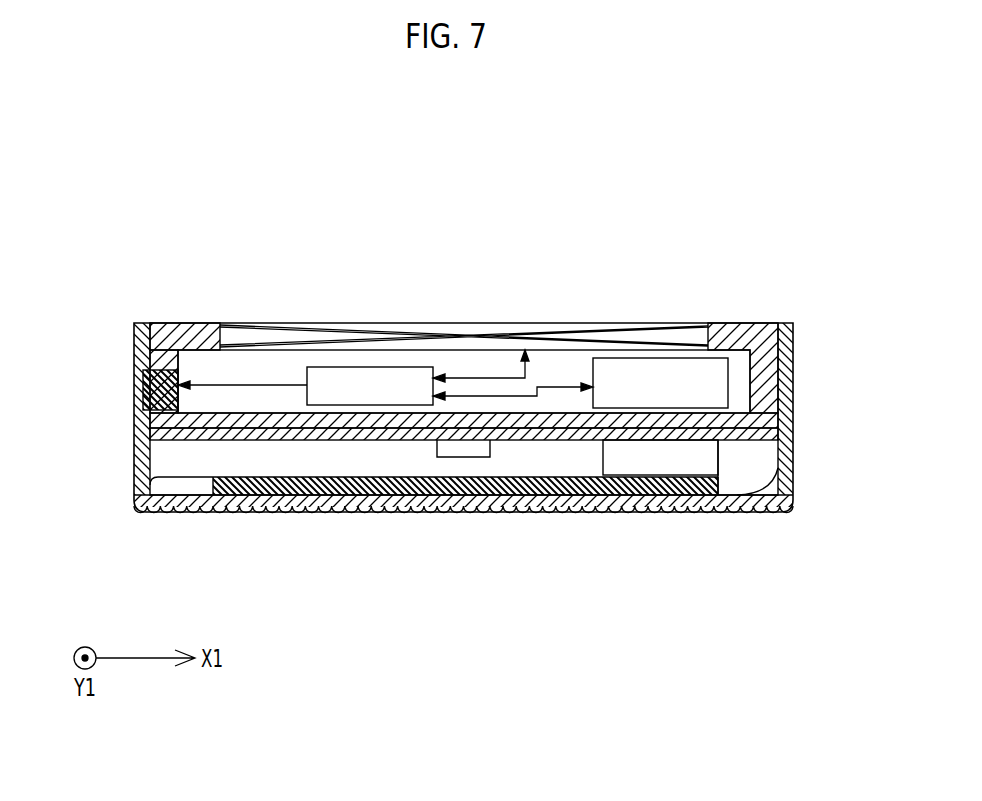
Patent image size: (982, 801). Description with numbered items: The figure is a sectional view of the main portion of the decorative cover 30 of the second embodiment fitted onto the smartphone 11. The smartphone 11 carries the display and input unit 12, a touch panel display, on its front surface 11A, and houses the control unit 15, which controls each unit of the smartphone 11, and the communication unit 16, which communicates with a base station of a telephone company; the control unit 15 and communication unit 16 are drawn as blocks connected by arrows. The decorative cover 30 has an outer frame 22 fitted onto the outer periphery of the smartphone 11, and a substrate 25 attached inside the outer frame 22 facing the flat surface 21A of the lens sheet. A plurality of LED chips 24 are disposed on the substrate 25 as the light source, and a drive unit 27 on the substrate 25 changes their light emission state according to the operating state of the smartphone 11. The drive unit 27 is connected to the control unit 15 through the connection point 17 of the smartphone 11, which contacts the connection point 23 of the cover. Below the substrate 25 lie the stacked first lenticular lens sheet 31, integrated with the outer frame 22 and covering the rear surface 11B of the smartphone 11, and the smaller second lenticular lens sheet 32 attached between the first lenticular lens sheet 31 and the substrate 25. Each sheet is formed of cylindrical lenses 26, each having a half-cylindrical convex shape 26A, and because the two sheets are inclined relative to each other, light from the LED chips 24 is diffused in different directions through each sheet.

The smartphone 11 is at (741, 318).
The front surface 11A is at (195, 350).
The rear surface 11B is at (160, 513).
The display and input unit 12 is at (530, 322).
The control unit 15 is at (400, 367).
The communication unit 16 is at (675, 358).
The connection point 17 is at (160, 352).
The flat surface 21A is at (793, 468).
The outer frame 22 is at (793, 388).
The connection point 23 is at (142, 398).
The LED chip 24 is at (445, 458).
The substrate 25 is at (297, 478).
The cylindrical lens 26 is at (333, 526).
The convex shape 26A is at (207, 512).
The drive unit 27 is at (718, 470).
The decorative cover 30 is at (477, 520).
The first lenticular lens sheet 31 is at (532, 516).
The second lenticular lens sheet 32 is at (600, 505).